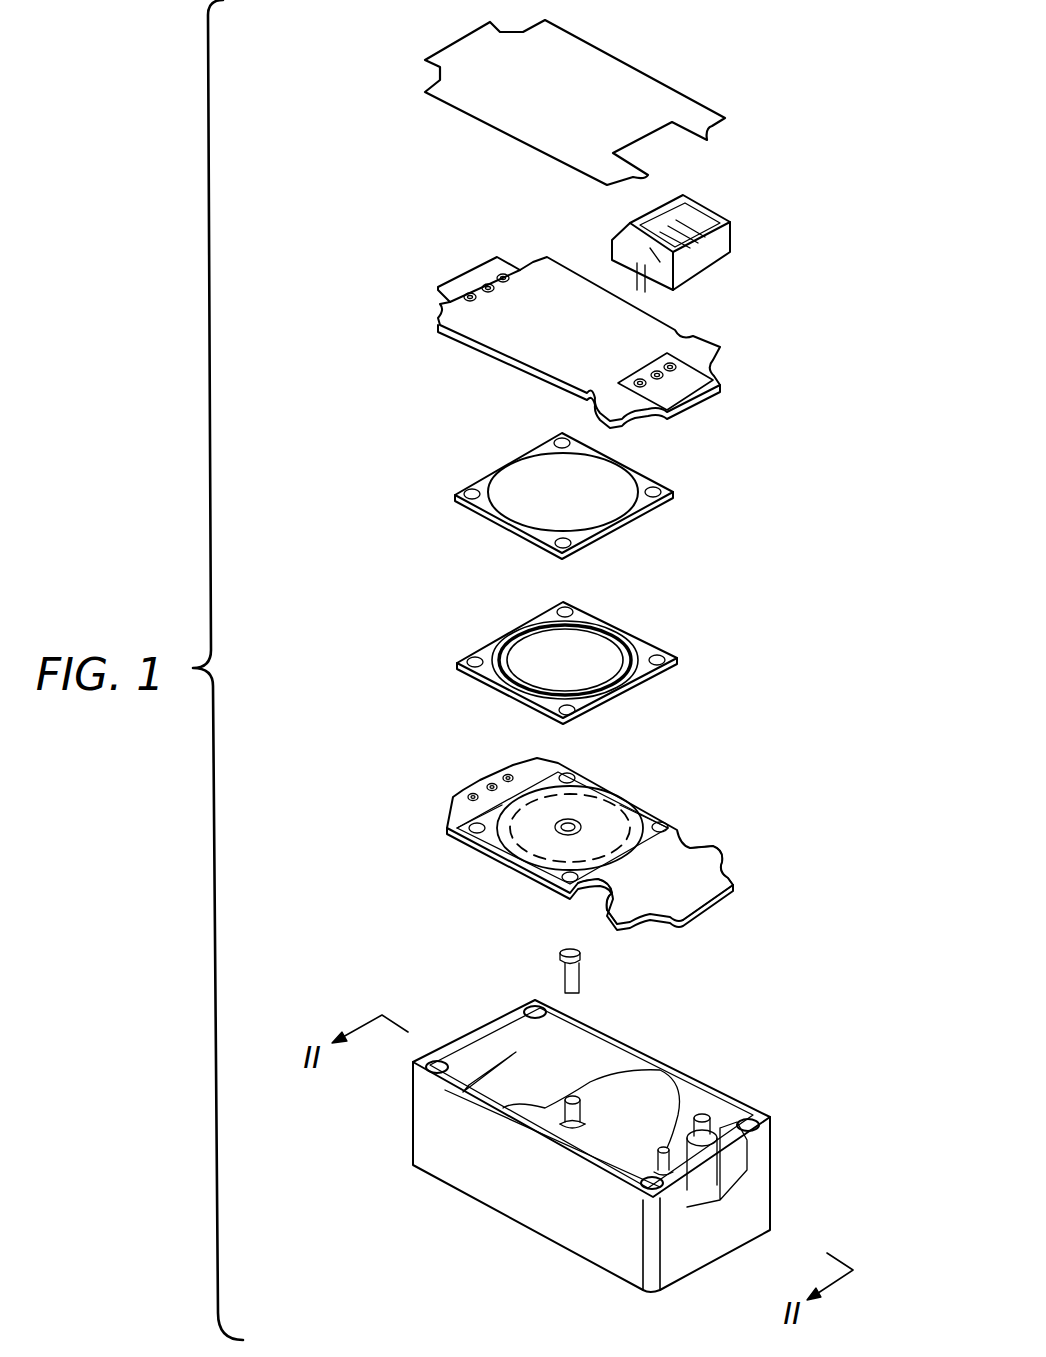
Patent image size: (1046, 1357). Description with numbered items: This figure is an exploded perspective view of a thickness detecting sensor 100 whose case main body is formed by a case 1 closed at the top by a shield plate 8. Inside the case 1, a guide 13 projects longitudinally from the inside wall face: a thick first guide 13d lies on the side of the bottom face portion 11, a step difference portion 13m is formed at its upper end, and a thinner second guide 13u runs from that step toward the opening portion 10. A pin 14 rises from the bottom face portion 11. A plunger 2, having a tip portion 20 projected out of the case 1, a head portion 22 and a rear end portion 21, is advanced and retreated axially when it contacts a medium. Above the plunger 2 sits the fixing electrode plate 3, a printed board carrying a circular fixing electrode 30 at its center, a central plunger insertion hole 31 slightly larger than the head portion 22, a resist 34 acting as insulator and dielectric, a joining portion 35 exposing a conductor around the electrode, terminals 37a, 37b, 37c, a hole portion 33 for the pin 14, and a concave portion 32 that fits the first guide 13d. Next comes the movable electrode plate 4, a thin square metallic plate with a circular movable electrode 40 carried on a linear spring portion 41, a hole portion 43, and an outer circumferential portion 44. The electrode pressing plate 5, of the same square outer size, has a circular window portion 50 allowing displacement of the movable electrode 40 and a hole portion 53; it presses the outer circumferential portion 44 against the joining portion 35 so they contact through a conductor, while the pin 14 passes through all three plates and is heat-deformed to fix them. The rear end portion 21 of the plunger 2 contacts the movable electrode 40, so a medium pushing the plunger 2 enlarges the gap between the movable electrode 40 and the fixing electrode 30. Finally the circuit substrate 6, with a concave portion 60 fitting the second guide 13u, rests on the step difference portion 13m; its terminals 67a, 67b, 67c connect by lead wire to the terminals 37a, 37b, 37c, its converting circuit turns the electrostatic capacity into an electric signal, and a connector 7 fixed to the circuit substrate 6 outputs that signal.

The thickness detecting sensor 100 is at (293, 30).
The shield plate 8 is at (670, 73).
The connector 7 is at (740, 237).
The circuit substrate 6 is at (602, 323).
The concave portion 60 is at (688, 340).
The terminal 67a is at (501, 275).
The terminal 67b is at (484, 287).
The terminal 67c is at (449, 300).
The electrode pressing plate 5 is at (589, 498).
The hole portion 53 is at (468, 500).
The window portion 50 is at (613, 513).
The movable electrode plate 4 is at (612, 636).
The outer circumferential portion 44 is at (487, 650).
The hole portion 43 is at (560, 610).
The spring portion 41 is at (627, 633).
The movable electrode 40 is at (597, 673).
The fixing electrode plate 3 is at (611, 820).
The fixing electrode 30 is at (578, 808).
The plunger insertion hole 31 is at (547, 832).
The concave portion 32 is at (690, 848).
The hole portion 33 is at (563, 883).
The resist 34 is at (502, 822).
The joining portion 35 is at (647, 817).
The terminal 37a is at (507, 774).
The terminal 37b is at (490, 784).
The terminal 37c is at (457, 805).
The plunger 2 is at (617, 975).
The tip portion 20 is at (577, 991).
The rear end portion 21 is at (581, 953).
The head portion 22 is at (559, 957).
The case 1 is at (641, 1148).
The opening portion 10 is at (587, 1173).
The bottom face portion 11 is at (543, 1133).
The pin 14 is at (665, 1150).
The guide 13 is at (771, 1176).
The second guide 13u is at (712, 1122).
The step difference portion 13m is at (722, 1140).
The first guide 13d is at (722, 1167).